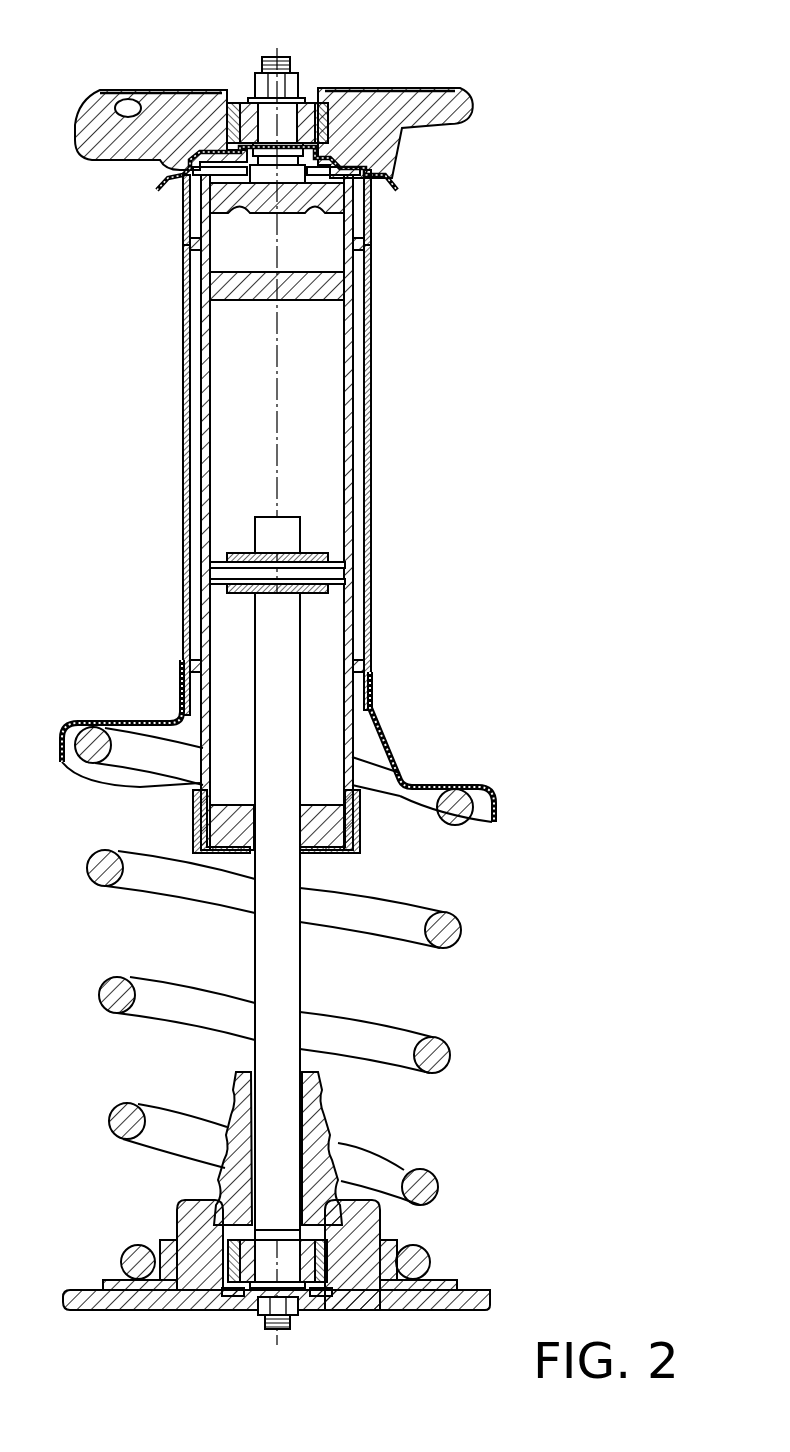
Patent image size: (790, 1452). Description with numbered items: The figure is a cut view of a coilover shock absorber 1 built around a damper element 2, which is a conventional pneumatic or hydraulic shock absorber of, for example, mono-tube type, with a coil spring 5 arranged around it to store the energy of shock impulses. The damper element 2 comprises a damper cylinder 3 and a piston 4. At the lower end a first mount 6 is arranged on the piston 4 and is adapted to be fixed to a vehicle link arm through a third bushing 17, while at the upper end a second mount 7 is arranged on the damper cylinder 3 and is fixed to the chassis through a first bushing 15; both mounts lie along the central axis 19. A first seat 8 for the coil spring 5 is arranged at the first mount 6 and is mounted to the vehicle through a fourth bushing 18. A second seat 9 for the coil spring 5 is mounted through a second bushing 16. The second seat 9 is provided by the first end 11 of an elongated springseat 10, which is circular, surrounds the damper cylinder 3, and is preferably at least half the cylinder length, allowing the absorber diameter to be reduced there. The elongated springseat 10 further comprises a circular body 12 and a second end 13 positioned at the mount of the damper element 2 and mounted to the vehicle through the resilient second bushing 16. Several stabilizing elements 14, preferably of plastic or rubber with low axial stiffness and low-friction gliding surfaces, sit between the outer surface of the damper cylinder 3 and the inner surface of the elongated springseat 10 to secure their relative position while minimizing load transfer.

The coilover shock absorber 1 is at (636, 128).
The damper element 2 is at (366, 358).
The damper cylinder 3 is at (352, 383).
The piston 4 is at (288, 960).
The coil spring 5 is at (447, 1060).
The first mount 6 is at (310, 1320).
The second mount 7 is at (378, 62).
The first seat 8 is at (510, 1277).
The second seat 9 is at (508, 815).
The elongated springseat 10 is at (404, 513).
The first end 11 is at (503, 780).
The circular body 12 is at (363, 563).
The second end 13 is at (403, 205).
The stabilizing elements 14 is at (371, 245).
The first bushing 15 is at (335, 108).
The second bushing 16 is at (380, 170).
The third bushing 17 is at (320, 1227).
The fourth bushing 18 is at (453, 1282).
The central axis 19 is at (282, 407).